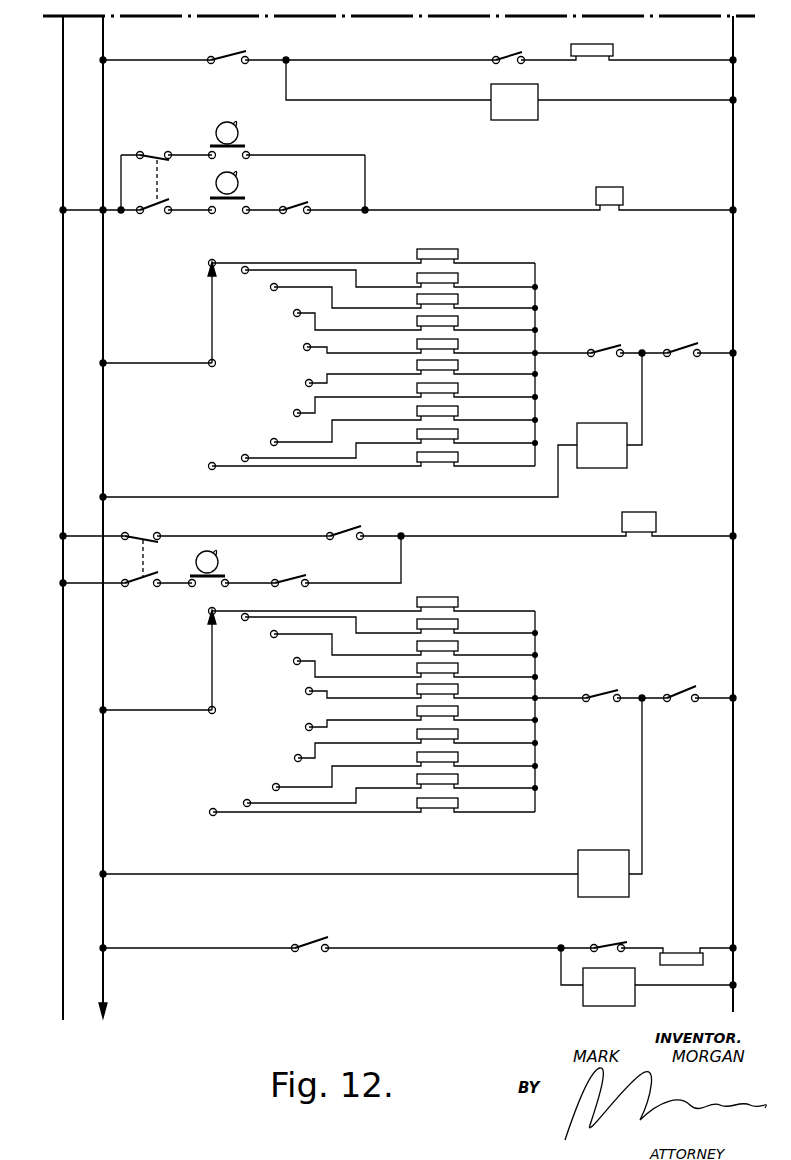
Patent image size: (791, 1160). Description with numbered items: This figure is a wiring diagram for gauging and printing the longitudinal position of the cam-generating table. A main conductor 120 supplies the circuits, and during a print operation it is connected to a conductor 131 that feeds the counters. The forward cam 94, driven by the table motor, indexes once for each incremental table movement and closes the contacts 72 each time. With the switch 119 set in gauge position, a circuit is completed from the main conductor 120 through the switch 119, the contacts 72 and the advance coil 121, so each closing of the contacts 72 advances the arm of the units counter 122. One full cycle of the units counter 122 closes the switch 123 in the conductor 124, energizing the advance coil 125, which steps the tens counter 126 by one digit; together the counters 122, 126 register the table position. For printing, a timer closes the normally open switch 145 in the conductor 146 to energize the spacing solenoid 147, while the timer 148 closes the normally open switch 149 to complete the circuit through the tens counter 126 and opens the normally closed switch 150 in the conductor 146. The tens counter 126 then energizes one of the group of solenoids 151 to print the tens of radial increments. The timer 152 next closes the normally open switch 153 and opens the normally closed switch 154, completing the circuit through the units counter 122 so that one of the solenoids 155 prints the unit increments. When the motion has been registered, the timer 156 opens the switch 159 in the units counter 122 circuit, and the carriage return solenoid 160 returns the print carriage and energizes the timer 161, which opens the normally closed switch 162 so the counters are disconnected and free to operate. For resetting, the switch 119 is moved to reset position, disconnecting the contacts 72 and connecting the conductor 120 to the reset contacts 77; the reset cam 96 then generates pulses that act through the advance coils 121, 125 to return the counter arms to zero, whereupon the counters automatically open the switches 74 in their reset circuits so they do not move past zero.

The main conductor 120 is at (62, 45).
The conductor 131 is at (104, 30).
The conductor 146 is at (138, 62).
The normally open switch 145 is at (232, 50).
The normally closed switch 150 is at (515, 55).
The spacing solenoid 147 is at (600, 50).
The timer 148 is at (518, 117).
The advance coil 121 is at (611, 192).
The switch 119 is at (162, 162).
The forward cam 94 is at (238, 133).
The contacts 72 is at (214, 159).
The reset cam 96 is at (238, 183).
The switch 74 is at (298, 207).
The reset contacts 77 is at (232, 216).
The tens counter 126 is at (213, 366).
The solenoids 151 is at (469, 457).
The normally closed switch 154 is at (605, 348).
The normally open switch 149 is at (680, 347).
The timer 152 is at (610, 460).
The conductor 124 is at (255, 536).
The switch 123 is at (360, 530).
The advance coil 125 is at (636, 522).
The units counter 122 is at (213, 713).
The solenoids 155 is at (470, 803).
The switch 159 is at (600, 690).
The normally open switch 153 is at (680, 690).
The timer 156 is at (608, 888).
The normally closed switch 162 is at (612, 945).
The carriage return solenoid 160 is at (685, 955).
The timer 161 is at (636, 1000).